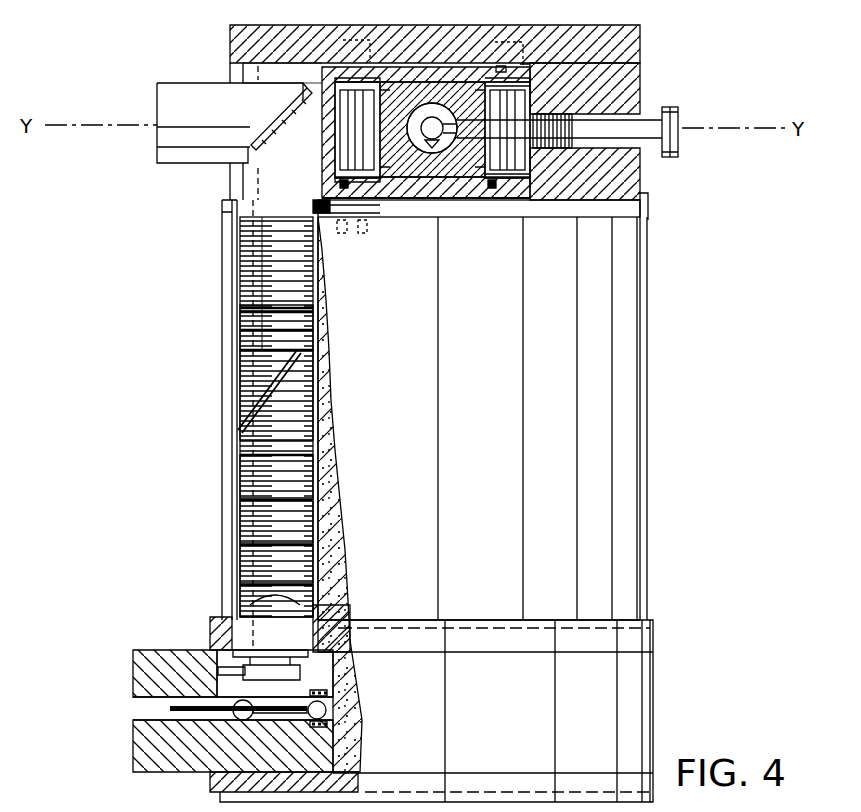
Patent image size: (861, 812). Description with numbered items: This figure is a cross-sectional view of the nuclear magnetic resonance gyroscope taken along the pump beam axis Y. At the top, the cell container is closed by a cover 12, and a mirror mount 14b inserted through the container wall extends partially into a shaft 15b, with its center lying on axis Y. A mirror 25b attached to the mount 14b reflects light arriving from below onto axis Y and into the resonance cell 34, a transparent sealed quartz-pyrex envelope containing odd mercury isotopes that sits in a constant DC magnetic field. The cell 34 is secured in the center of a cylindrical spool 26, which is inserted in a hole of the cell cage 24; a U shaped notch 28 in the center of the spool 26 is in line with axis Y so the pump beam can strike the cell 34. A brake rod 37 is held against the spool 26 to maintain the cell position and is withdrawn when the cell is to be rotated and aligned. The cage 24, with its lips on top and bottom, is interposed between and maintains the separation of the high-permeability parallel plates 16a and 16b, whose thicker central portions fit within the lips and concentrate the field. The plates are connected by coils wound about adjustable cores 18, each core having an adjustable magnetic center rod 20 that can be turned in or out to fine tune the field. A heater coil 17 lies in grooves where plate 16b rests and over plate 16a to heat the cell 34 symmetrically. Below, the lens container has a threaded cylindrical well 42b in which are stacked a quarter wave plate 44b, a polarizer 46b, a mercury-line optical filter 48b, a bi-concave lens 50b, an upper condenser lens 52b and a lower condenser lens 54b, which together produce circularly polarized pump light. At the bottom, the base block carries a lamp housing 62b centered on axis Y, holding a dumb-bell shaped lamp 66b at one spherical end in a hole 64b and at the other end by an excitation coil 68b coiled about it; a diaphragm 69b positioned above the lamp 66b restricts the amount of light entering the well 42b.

The cover 12 is at (585, 40).
The mirror mount 14b is at (185, 100).
The shaft 15b is at (290, 72).
The parallel plate 16a is at (488, 77).
The parallel plate 16b is at (390, 140).
The heater coil 17 is at (492, 188).
The adjustable core 18 is at (350, 92).
The adjustable magnetic center rod 20 is at (516, 70).
The cell cage 24 is at (420, 100).
The mirror 25b is at (265, 115).
The cylindrical spool 26 is at (460, 140).
The U shaped notch 28 is at (383, 200).
The resonance cell 34 is at (437, 103).
The brake rod 37 is at (672, 125).
The threaded cylindrical well 42b is at (257, 278).
The quarter wave plate 44b is at (247, 315).
The polarizer 46b is at (247, 378).
The 2537 Angstrom filter 48b is at (250, 468).
The bi-concave lens 50b is at (250, 522).
The upper condenser lens 52b is at (247, 563).
The lower condenser lens 54b is at (247, 603).
The lamp housing 62b is at (148, 677).
The hole 64b is at (150, 710).
The lamp 66b is at (282, 713).
The excitation coil 68b is at (328, 694).
The diaphragm 69b is at (277, 660).